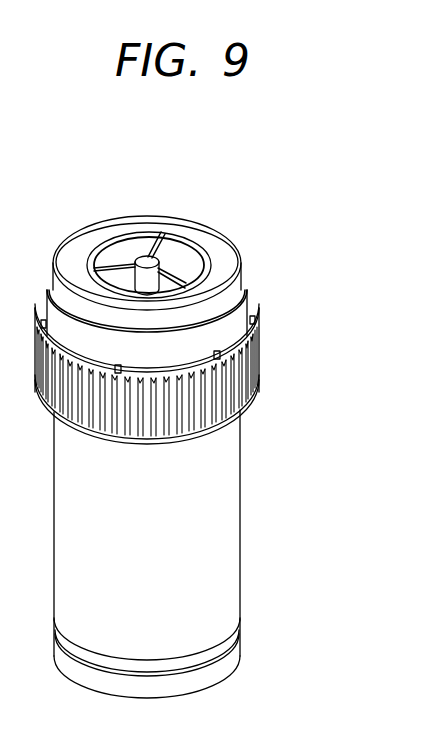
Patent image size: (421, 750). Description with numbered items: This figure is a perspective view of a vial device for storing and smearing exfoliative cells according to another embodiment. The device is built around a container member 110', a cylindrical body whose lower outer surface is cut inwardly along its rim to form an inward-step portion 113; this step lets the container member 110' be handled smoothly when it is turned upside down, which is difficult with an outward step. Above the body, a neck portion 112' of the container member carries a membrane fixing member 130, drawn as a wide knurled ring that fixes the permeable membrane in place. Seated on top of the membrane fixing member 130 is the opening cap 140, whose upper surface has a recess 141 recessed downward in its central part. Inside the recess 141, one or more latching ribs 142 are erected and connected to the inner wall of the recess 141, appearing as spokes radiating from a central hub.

The container member 110' is at (185, 515).
The neck portion of body 112' is at (180, 412).
The inward-step portion 113 is at (228, 638).
The membrane fixing member 130 is at (259, 354).
The opening cap 140 is at (232, 260).
The recess 141 is at (190, 269).
The latching ribs 142 is at (110, 264).